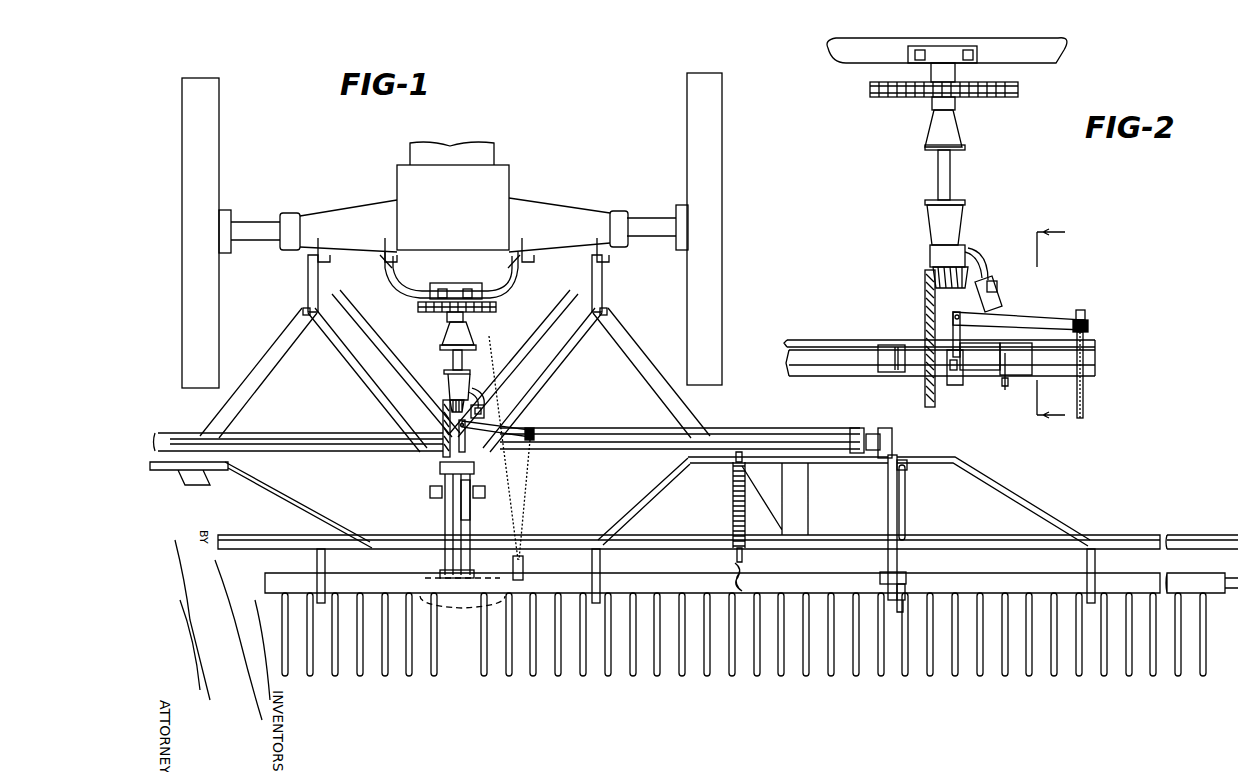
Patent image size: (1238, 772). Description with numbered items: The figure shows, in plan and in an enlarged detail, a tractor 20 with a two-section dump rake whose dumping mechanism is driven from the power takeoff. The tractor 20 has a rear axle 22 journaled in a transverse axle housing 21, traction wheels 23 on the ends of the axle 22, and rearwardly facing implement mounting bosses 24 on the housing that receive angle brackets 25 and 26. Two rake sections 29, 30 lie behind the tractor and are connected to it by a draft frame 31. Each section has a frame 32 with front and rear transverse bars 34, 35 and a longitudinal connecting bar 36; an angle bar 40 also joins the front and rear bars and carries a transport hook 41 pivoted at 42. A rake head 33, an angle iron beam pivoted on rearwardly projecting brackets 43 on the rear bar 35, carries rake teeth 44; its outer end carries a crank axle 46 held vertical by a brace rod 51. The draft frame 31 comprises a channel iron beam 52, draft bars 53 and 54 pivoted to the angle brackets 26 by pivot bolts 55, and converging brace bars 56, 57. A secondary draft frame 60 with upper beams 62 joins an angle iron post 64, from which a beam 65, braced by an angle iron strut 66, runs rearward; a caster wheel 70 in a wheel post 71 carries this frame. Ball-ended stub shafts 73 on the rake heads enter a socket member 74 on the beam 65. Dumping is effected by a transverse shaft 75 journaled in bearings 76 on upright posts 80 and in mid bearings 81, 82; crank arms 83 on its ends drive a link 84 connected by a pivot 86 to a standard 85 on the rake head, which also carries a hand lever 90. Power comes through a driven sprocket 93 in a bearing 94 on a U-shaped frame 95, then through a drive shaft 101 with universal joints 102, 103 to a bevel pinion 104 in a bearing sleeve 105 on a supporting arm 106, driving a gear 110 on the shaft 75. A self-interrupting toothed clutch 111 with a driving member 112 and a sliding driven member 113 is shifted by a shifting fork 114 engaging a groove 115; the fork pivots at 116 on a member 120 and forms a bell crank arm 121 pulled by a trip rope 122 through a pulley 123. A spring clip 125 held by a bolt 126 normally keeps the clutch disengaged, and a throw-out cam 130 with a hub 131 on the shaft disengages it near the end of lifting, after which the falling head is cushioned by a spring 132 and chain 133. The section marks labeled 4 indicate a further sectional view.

In FIG. 1, the tractor 20 is at (538, 162).
In FIG. 1, the axle housing 21 is at (530, 215).
In FIG. 1, the rear axle 22 is at (250, 228).
In FIG. 1, the traction wheels 23 is at (205, 128).
In FIG. 1, the implement mounting bosses 24 is at (388, 240).
In FIG. 1, the angle bracket 25 is at (382, 260).
In FIG. 1, the angle bracket 26 is at (308, 266).
In FIG. 1, the rake section 29 is at (338, 701).
In FIG. 1, the rake section 30 is at (840, 706).
In FIG. 1, the draft frame 31 is at (588, 455).
In FIG. 1, the frame 32 is at (323, 492).
In FIG. 1, the rake head 33 is at (280, 580).
In FIG. 1, the front transverse bar 34 is at (203, 474).
In FIG. 1, the rear transverse bar 35 is at (246, 536).
In FIG. 1, the longitudinal connecting bar 36 is at (800, 502).
In FIG. 1, the angle bar 40 is at (905, 470).
In FIG. 1, the transport hook 41 is at (905, 516).
In FIG. 1, the pivot 42 is at (905, 486).
In FIG. 1, the brackets 43 is at (326, 562).
In FIG. 1, the rake teeth 44 is at (760, 672).
In FIG. 1, the crank axle 46 is at (1222, 600).
In FIG. 1, the brace rod 51 is at (1237, 548).
In FIG. 1, the channel iron beam 52 is at (320, 445).
In FIG. 2, the channel iron beam 52 is at (825, 345).
In FIG. 1, the draft bar 53 is at (245, 392).
In FIG. 1, the draft bar 54 is at (643, 360).
In FIG. 1, the pivot bolts 55 is at (308, 290).
In FIG. 1, the brace bar 56 is at (340, 358).
In FIG. 1, the brace bar 57 is at (560, 376).
In FIG. 1, the secondary draft frame 60 is at (407, 503).
In FIG. 1, the upper beams 62 is at (385, 372).
In FIG. 1, the angle iron post 64 is at (440, 470).
In FIG. 1, the beam 65 is at (446, 548).
In FIG. 1, the angle iron strut 66 is at (453, 519).
In FIG. 1, the caster wheel 70 is at (470, 512).
In FIG. 1, the wheel post 71 is at (478, 492).
In FIG. 1, the ball-ended stub shaft 73 is at (500, 588).
In FIG. 1, the socket member 74 is at (466, 574).
In FIG. 1, the transverse shaft 75 is at (620, 446).
In FIG. 2, the transverse shaft 75 is at (840, 372).
In FIG. 1, the bearings 76 is at (862, 430).
In FIG. 1, the upright posts 80 is at (878, 434).
In FIG. 2, the bearing 81 is at (890, 365).
In FIG. 2, the bearing 82 is at (980, 372).
In FIG. 1, the crank arms 83 is at (878, 458).
In FIG. 1, the link 84 is at (888, 518).
In FIG. 1, the standard 85 is at (880, 578).
In FIG. 1, the pivot 86 is at (905, 588).
In FIG. 1, the hand lever 90 is at (906, 600).
In FIG. 1, the driven sprocket 93 is at (505, 311).
In FIG. 2, the driven sprocket 93 is at (986, 105).
In FIG. 1, the bearing 94 is at (455, 292).
In FIG. 2, the bearing 94 is at (945, 55).
In FIG. 1, the U-shaped frame 95 is at (400, 292).
In FIG. 2, the U-shaped frame 95 is at (1030, 52).
In FIG. 1, the drive shaft 101 is at (475, 355).
In FIG. 2, the drive shaft 101 is at (945, 175).
In FIG. 1, the universal joint 102 is at (462, 332).
In FIG. 2, the universal joint 102 is at (945, 128).
In FIG. 1, the universal joint 103 is at (449, 366).
In FIG. 2, the universal joint 103 is at (945, 222).
In FIG. 1, the bevel pinion 104 is at (450, 398).
In FIG. 2, the bevel pinion 104 is at (940, 280).
In FIG. 2, the bearing sleeve 105 is at (965, 250).
In FIG. 1, the supporting arm 106 is at (476, 398).
In FIG. 2, the supporting arm 106 is at (972, 272).
In FIG. 1, the gear 110 is at (445, 430).
In FIG. 2, the gear 110 is at (928, 310).
In FIG. 1, the self-interrupting toothed clutch 111 is at (493, 391).
In FIG. 2, the self-interrupting toothed clutch 111 is at (1067, 301).
In FIG. 2, the driving member 112 is at (935, 395).
In FIG. 2, the driven member 113 is at (945, 390).
In FIG. 2, the shifting fork 114 is at (950, 335).
In FIG. 2, the groove 115 is at (958, 372).
In FIG. 1, the pivot connection 116 is at (462, 436).
In FIG. 2, the pivot connection 116 is at (953, 318).
In FIG. 1, the member 120 is at (498, 430).
In FIG. 2, the member 120 is at (1000, 318).
In FIG. 2, the bell crank arm 121 is at (1088, 322).
In FIG. 1, the trip rope 122 is at (521, 498).
In FIG. 2, the trip rope 122 is at (1083, 385).
In FIG. 1, the pulley 123 is at (524, 565).
In FIG. 2, the spring clip 125 is at (997, 298).
In FIG. 1, the bolt 126 is at (477, 411).
In FIG. 2, the bolt 126 is at (990, 283).
In FIG. 2, the throw-out cam 130 is at (1003, 392).
In FIG. 2, the hub 131 is at (1015, 375).
In FIG. 1, the spring 132 is at (733, 514).
In FIG. 1, the chain 133 is at (750, 570).
In FIG. 2, the section line 4 is at (1050, 313).